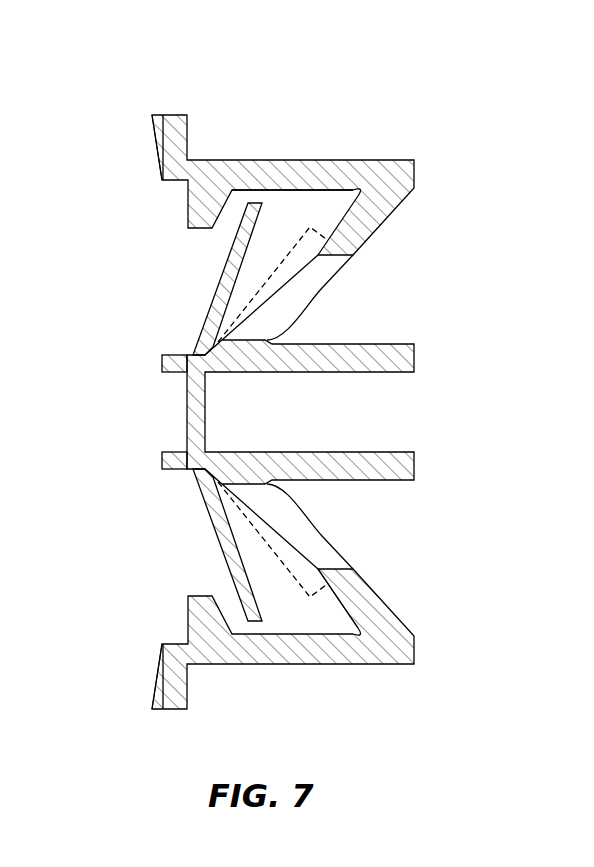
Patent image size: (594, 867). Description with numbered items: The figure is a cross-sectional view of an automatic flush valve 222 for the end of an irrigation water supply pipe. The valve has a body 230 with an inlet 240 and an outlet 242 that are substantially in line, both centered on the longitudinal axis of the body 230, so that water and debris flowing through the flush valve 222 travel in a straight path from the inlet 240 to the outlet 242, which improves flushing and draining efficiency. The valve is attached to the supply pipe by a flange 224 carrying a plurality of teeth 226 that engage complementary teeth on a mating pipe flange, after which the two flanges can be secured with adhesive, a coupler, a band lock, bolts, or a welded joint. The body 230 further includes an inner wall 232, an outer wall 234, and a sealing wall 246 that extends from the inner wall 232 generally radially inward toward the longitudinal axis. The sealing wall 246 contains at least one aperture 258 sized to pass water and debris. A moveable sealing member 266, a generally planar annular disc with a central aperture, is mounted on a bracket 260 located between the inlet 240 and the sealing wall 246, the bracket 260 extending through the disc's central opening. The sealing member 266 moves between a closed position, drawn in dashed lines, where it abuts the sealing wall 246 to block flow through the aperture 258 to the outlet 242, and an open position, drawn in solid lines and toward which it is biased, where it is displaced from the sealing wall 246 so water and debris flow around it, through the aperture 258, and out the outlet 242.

The flush valve 222 is at (366, 100).
The flange 224 is at (187, 700).
The teeth 226 is at (152, 122).
The body 230 is at (330, 664).
The inner wall 232 is at (325, 192).
The outer wall 234 is at (348, 160).
The inlet 240 is at (153, 403).
The outlet 242 is at (418, 507).
The sealing wall 246 is at (365, 620).
The aperture 258 is at (343, 300).
The bracket 260 is at (162, 463).
The moveable sealing member 266 is at (210, 285).